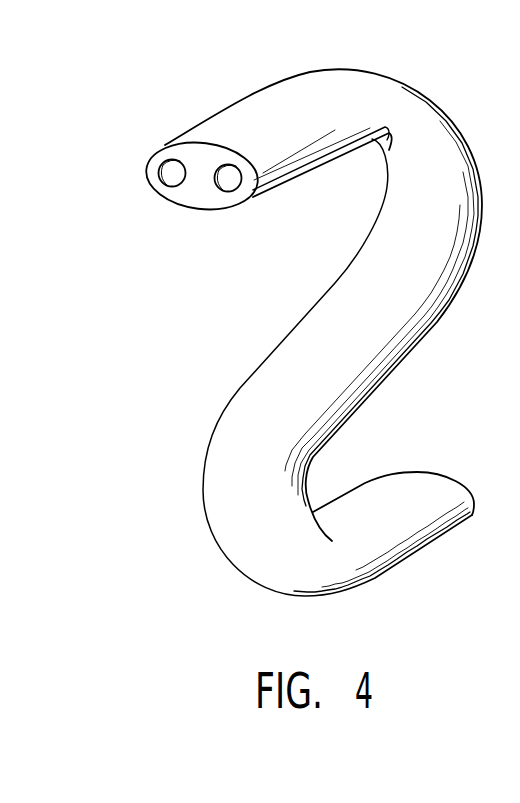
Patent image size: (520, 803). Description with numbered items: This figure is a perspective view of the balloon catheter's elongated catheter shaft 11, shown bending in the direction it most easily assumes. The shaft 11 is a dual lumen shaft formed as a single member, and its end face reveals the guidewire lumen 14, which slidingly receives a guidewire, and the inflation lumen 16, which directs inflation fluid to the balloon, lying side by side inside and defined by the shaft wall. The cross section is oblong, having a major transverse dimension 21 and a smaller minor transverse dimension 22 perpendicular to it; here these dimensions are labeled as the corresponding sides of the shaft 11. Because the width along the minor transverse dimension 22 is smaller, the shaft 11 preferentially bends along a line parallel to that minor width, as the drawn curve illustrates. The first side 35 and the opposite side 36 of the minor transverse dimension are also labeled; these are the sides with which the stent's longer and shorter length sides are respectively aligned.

The catheter shaft 11 is at (292, 320).
The guidewire lumen 14 is at (238, 188).
The inflation lumen 16 is at (170, 186).
The major transverse dimension 21 is at (198, 210).
The minor transverse dimension 22 is at (147, 172).
The first side of the minor transverse dimension 35 is at (197, 142).
The opposite side of the minor transverse dimension 36 is at (203, 210).